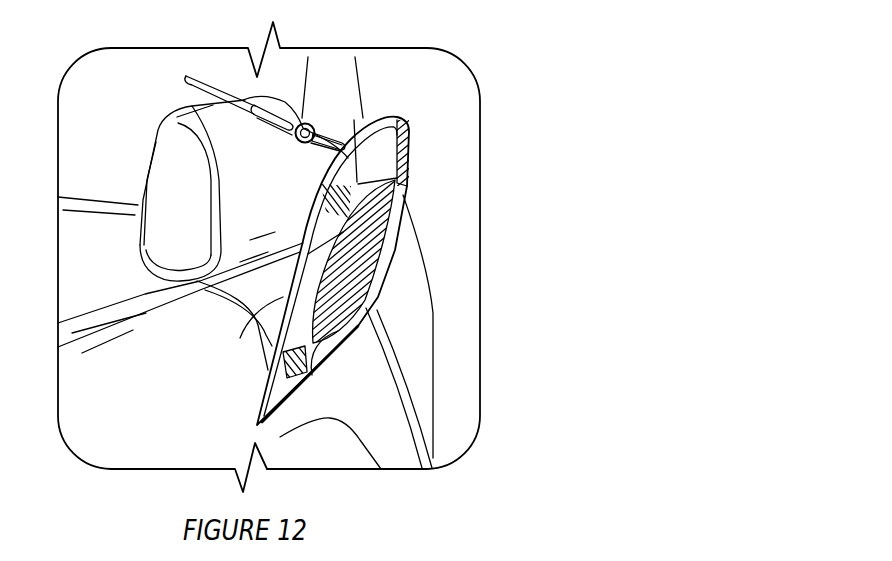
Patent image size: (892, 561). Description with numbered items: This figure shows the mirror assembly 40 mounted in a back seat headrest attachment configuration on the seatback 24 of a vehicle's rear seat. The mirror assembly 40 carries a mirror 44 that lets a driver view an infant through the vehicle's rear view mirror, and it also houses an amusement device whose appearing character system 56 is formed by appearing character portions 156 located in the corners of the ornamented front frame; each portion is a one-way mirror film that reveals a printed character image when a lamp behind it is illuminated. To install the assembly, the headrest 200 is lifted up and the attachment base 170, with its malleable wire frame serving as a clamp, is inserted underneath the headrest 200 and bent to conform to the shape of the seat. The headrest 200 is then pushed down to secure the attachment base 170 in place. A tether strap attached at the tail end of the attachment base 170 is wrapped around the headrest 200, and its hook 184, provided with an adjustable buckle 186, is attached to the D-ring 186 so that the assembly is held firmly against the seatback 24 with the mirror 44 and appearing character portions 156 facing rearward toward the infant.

The seatback 24 is at (100, 358).
The mirror assembly 40 is at (434, 278).
The mirror 44 is at (385, 212).
The appearing character system 56 is at (464, 51).
The appearing character portions 156 is at (415, 149).
The attachment base 170 is at (262, 307).
The hook 184 is at (314, 140).
The adjustable buckle 186 is at (247, 102).
The headrest 200 is at (160, 237).